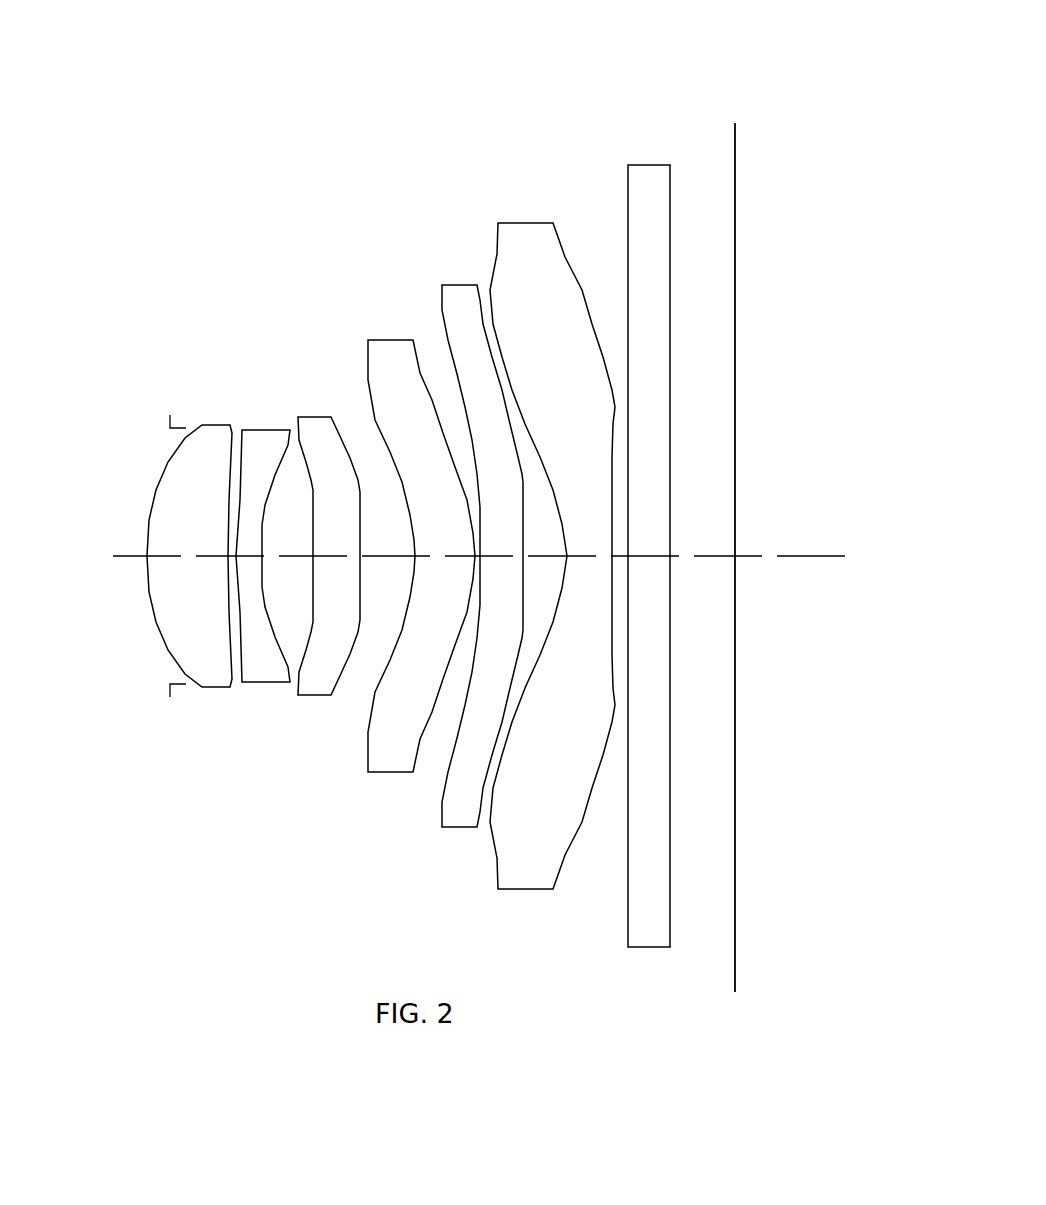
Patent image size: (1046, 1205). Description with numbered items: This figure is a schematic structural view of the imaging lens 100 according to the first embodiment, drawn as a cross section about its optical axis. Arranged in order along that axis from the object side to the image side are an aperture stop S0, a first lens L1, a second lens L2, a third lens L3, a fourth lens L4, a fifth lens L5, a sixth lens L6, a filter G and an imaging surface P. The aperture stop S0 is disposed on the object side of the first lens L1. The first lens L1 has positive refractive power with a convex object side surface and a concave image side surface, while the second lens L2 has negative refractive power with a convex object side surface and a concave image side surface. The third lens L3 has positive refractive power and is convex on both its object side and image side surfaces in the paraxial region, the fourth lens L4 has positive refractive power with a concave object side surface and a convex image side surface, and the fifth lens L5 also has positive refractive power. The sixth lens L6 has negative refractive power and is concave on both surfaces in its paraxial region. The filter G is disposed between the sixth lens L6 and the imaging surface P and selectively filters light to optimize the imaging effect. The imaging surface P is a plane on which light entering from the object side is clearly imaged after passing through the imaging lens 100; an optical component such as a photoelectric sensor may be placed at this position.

The imaging lens 100 is at (250, 127).
The aperture stop S0 is at (165, 425).
The first lens L1 is at (215, 425).
The second lens L2 is at (266, 430).
The third lens L3 is at (313, 417).
The fourth lens L4 is at (393, 340).
The fifth lens L5 is at (460, 285).
The sixth lens L6 is at (523, 222).
The filter G is at (648, 165).
The imaging surface P is at (733, 137).